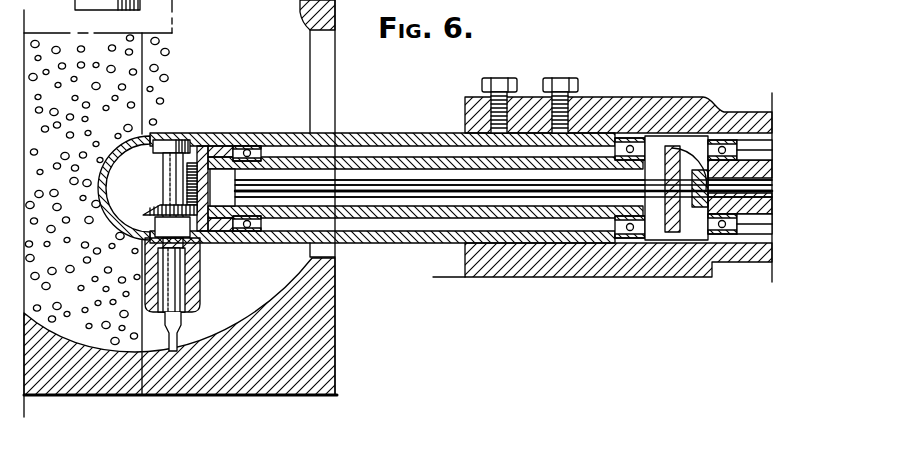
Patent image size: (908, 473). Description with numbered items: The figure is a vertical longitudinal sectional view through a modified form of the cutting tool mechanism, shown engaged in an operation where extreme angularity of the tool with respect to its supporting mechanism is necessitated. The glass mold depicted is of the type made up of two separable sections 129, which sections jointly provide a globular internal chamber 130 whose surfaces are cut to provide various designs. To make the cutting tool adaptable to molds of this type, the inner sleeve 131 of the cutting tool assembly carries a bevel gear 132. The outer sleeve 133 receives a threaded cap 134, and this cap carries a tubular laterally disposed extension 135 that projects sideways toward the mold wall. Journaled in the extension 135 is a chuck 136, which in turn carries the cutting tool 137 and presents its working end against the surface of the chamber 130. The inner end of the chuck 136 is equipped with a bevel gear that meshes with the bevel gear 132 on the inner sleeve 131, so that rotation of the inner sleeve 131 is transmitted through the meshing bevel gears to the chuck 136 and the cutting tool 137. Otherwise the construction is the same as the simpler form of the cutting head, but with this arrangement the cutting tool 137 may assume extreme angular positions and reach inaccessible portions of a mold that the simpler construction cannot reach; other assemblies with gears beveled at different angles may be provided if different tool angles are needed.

The separable sections 129 is at (115, 395).
The globular internal chamber 130 is at (271, 197).
The inner sleeve 131 is at (393, 215).
The bevel gear 132 is at (217, 170).
The outer sleeve 133 is at (377, 140).
The threaded cap 134 is at (172, 141).
The tubular laterally disposed extension 135 is at (200, 290).
The chuck 136 is at (200, 262).
The cutting tool 137 is at (178, 332).